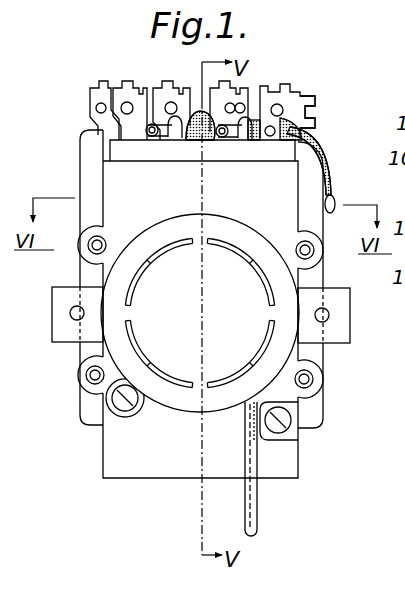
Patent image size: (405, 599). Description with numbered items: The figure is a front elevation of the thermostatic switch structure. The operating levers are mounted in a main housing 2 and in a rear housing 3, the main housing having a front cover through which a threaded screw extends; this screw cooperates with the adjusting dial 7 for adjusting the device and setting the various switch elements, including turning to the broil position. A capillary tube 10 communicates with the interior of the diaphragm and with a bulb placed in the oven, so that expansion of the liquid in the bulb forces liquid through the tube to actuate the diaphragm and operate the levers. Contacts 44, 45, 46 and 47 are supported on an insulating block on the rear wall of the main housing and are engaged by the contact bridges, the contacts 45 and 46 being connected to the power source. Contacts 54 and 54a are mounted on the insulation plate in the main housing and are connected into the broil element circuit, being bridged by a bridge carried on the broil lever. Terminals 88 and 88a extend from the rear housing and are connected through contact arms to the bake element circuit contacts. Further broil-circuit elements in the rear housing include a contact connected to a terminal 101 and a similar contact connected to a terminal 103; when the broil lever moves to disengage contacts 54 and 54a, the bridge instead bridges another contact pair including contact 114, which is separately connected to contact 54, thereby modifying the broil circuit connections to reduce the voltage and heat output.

The main housing 2 is at (118, 446).
The rear housing 3 is at (92, 350).
The adjusting dial 7 is at (186, 366).
The capillary tube 10 is at (258, 507).
The contact 44 is at (127, 92).
The contact 45 is at (173, 141).
The contact 46 is at (237, 143).
The contact 47 is at (285, 110).
The contact 54 is at (305, 123).
The contact 54a is at (205, 134).
The terminal 88 is at (92, 97).
The terminal 88a is at (171, 92).
The terminal 101 is at (316, 98).
The terminal 103 is at (249, 100).
The contact 114 is at (337, 198).